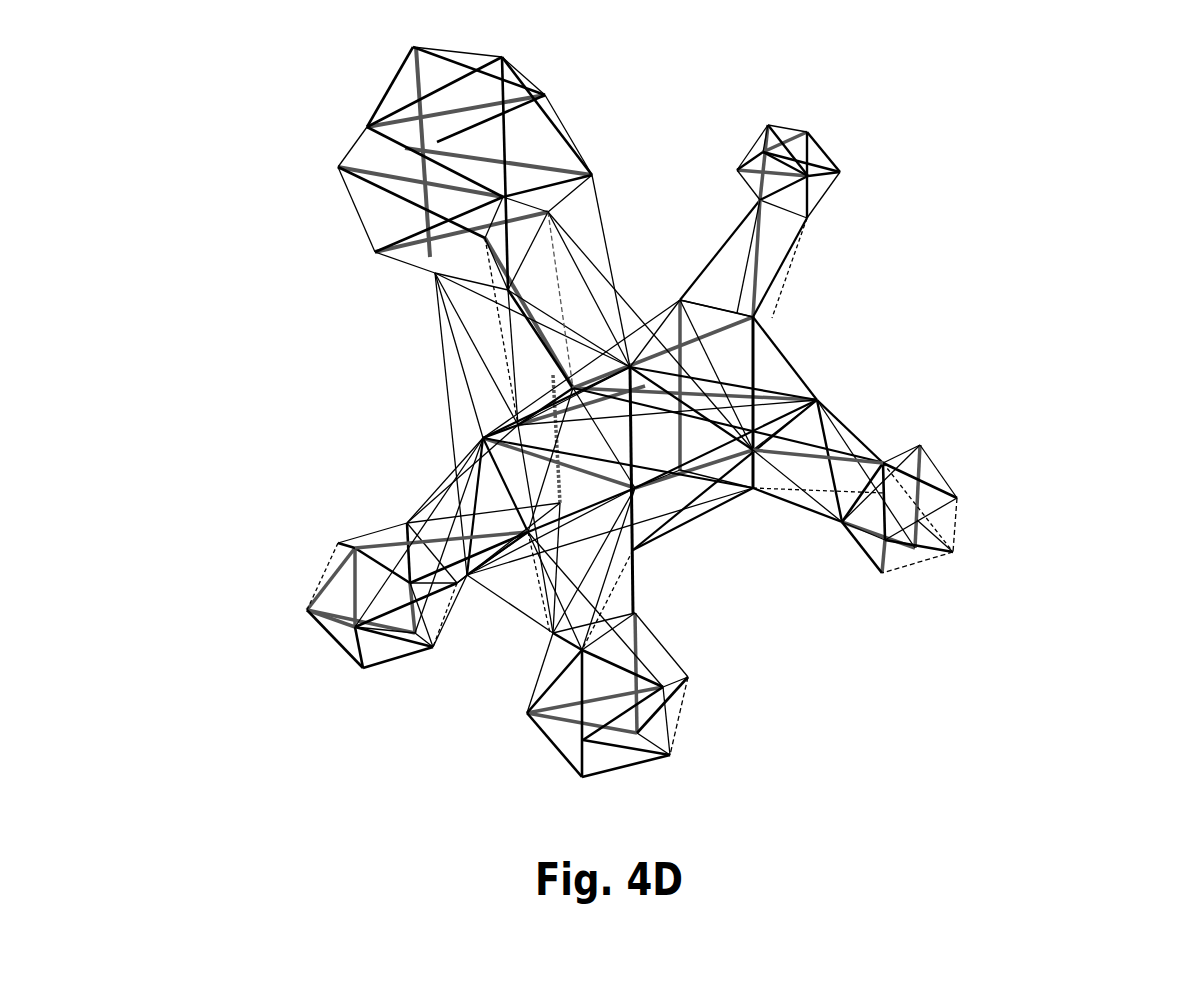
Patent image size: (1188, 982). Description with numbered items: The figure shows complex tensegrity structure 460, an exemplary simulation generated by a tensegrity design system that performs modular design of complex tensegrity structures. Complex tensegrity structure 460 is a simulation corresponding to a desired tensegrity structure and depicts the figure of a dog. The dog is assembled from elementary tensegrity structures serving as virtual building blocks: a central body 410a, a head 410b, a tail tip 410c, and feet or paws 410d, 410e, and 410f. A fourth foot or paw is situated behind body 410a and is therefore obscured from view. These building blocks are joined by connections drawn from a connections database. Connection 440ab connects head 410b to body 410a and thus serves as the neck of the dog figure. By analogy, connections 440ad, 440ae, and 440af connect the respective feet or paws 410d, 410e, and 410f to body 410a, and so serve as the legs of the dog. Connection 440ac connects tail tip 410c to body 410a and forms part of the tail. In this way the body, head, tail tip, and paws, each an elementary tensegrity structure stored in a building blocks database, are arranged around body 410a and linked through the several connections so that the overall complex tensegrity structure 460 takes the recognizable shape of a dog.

The complex tensegrity structure 460 is at (1089, 131).
The body 410a is at (463, 434).
The head 410b is at (562, 100).
The tail tip 410c is at (831, 124).
The foot or paw 410d is at (920, 582).
The foot or paw 410e is at (524, 746).
The foot or paw 410f is at (313, 642).
The connection 440ab is at (588, 261).
The connection 440ac is at (808, 271).
The connection 440ad is at (868, 408).
The connection 440ae is at (655, 575).
The connection 440af is at (487, 582).